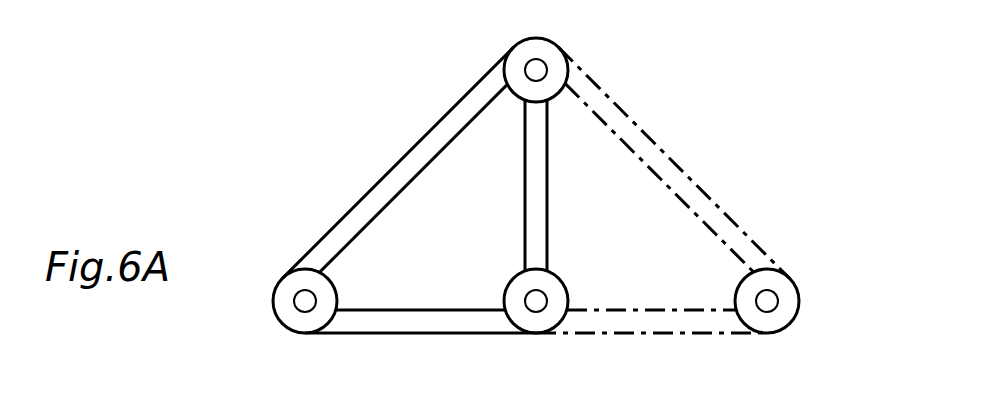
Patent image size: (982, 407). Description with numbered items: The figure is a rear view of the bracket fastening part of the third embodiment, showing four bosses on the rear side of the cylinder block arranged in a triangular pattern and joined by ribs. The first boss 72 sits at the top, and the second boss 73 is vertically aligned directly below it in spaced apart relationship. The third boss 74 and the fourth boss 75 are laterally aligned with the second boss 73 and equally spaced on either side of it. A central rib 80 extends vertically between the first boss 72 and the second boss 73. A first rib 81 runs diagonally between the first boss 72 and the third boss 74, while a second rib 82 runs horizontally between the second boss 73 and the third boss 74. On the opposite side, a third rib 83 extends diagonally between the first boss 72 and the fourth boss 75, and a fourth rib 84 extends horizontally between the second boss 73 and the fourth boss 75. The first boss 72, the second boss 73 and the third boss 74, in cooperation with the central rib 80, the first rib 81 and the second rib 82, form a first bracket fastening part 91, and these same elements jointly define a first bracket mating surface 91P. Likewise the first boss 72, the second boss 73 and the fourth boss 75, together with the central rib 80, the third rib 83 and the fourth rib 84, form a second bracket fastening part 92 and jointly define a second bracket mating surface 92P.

The first boss 72 is at (542, 48).
The second boss 73 is at (542, 320).
The third boss 74 is at (307, 338).
The fourth boss 75 is at (788, 331).
The central rib 80 is at (547, 187).
The first rib 81 is at (413, 159).
The second rib 82 is at (422, 333).
The third rib 83 is at (703, 192).
The fourth rib 84 is at (668, 308).
The first bracket fastening part 91 is at (390, 162).
The second bracket fastening part 92 is at (674, 162).
The first bracket mating surface 91P is at (320, 315).
The second bracket mating surface 92P is at (755, 315).